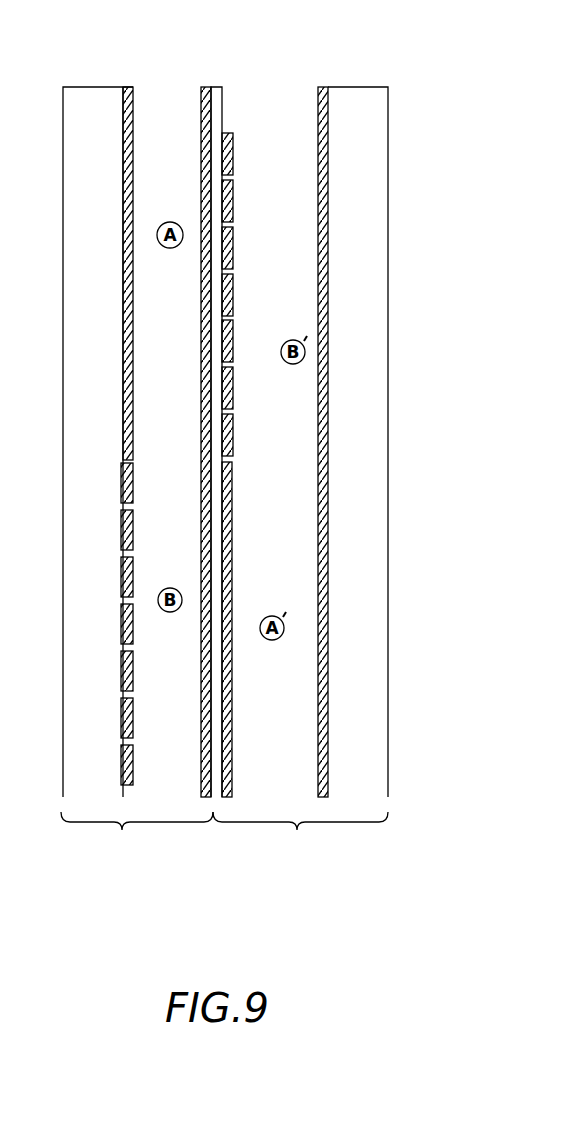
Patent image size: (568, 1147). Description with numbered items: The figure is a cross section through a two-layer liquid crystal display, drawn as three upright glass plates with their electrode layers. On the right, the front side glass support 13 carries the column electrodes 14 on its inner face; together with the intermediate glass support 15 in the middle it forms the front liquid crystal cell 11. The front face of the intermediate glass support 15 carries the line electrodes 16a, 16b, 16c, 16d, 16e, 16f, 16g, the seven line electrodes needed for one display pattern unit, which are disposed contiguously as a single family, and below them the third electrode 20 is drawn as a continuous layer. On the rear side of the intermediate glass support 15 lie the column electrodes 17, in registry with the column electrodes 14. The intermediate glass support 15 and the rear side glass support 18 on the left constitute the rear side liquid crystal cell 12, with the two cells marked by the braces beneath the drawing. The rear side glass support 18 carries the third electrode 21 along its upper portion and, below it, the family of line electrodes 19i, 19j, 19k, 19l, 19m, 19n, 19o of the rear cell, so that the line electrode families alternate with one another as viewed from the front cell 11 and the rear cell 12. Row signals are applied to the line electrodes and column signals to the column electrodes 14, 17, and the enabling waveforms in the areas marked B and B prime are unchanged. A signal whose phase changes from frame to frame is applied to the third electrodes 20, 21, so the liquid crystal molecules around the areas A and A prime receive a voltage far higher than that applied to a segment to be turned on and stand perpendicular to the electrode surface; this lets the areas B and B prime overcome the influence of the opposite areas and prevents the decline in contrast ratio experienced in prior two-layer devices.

The front liquid crystal cell 11 is at (300, 837).
The rear side liquid crystal cell 12 is at (137, 837).
The front side glass support 13 is at (367, 105).
The column electrodes 14 is at (322, 87).
The intermediate glass support 15 is at (222, 86).
The line electrode 16a is at (233, 148).
The line electrode 16b is at (233, 197).
The line electrode 16c is at (233, 244).
The line electrode 16d is at (233, 290).
The line electrode 16e is at (233, 339).
The line electrode 16f is at (233, 385).
The line electrode 16g is at (233, 437).
The column electrodes 17 is at (212, 86).
The rear side glass support 18 is at (90, 122).
The line electrode 19i is at (133, 479).
The line electrode 19j is at (133, 533).
The line electrode 19k is at (133, 578).
The line electrode 19l is at (133, 630).
The line electrode 19m is at (133, 676).
The line electrode 19n is at (133, 725).
The line electrode 19o is at (133, 772).
The third electrode 20 is at (232, 595).
The third electrode 21 is at (133, 298).